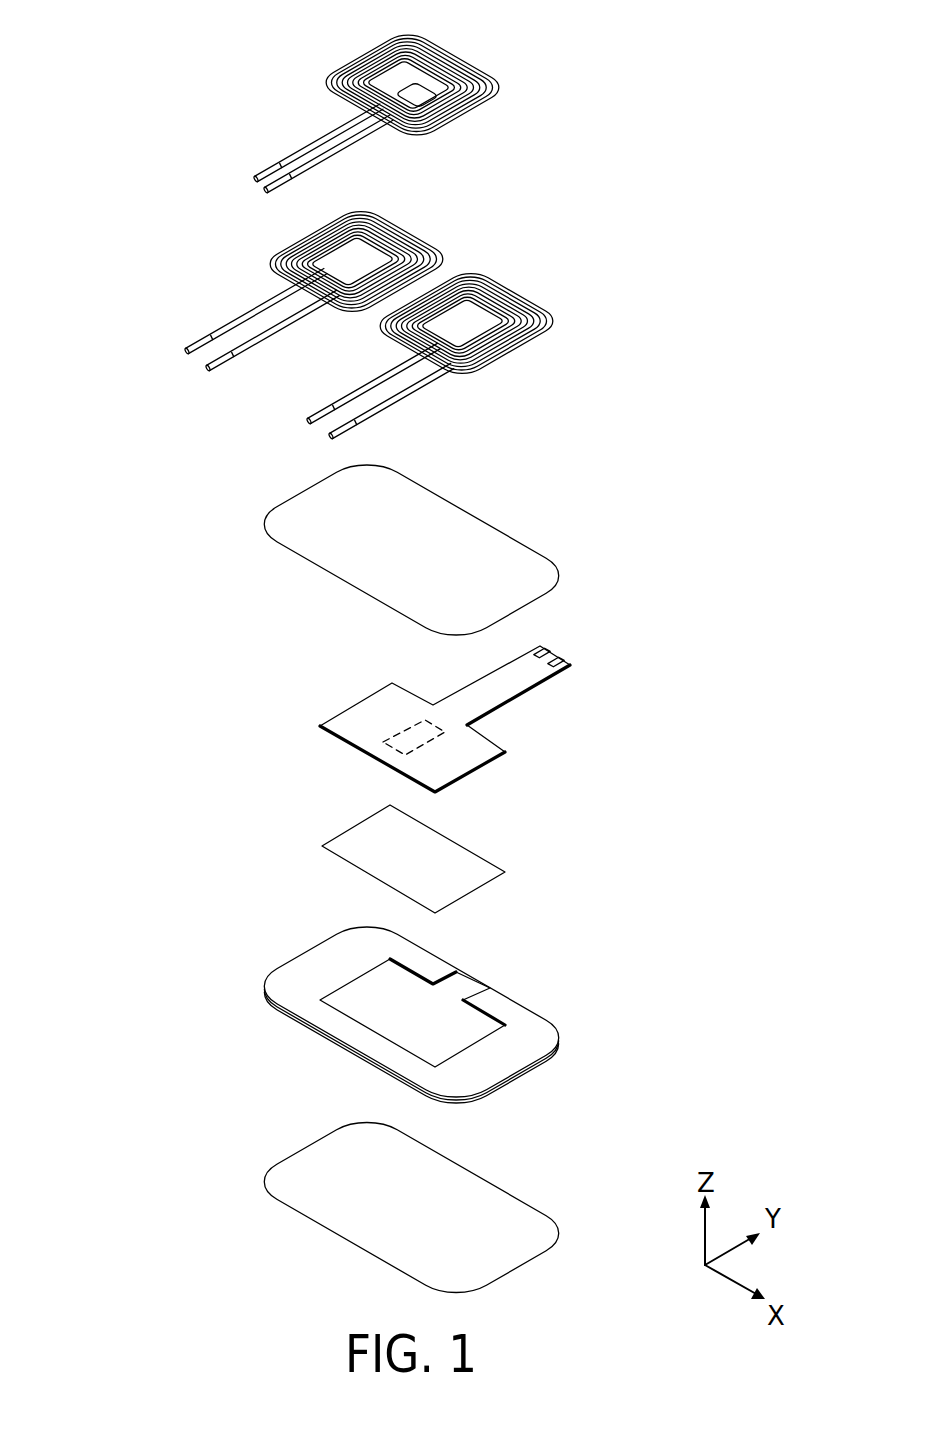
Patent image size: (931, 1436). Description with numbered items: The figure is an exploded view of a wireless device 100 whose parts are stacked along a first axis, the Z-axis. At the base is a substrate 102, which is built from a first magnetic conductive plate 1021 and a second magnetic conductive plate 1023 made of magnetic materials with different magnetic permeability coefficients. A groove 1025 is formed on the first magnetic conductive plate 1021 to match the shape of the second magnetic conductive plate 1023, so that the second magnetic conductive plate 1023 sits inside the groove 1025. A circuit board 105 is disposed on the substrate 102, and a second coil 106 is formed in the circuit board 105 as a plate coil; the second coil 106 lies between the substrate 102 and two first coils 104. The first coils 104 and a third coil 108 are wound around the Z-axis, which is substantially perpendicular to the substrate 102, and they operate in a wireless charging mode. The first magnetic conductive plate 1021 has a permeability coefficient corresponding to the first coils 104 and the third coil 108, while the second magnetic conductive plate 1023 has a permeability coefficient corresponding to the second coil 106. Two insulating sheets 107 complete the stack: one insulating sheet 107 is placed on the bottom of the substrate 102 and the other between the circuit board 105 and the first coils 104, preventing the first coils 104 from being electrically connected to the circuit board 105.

The wireless device 100 is at (137, 24).
The third coil 108 is at (478, 80).
The first coils 104 is at (397, 232).
The insulating sheets 107 is at (537, 570).
The circuit board 105 is at (357, 718).
The second coil 106 is at (443, 720).
The substrate 102 is at (232, 808).
The second magnetic conductive plate 1023 is at (345, 843).
The first magnetic conductive plate 1021 is at (347, 953).
The groove 1025 is at (462, 987).